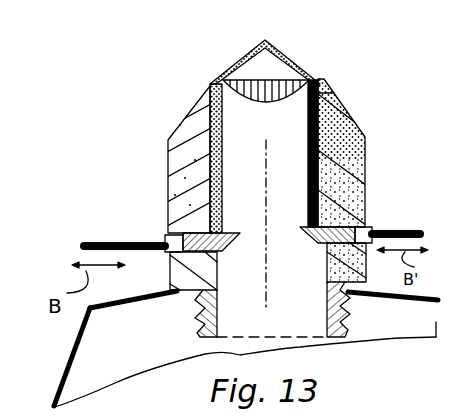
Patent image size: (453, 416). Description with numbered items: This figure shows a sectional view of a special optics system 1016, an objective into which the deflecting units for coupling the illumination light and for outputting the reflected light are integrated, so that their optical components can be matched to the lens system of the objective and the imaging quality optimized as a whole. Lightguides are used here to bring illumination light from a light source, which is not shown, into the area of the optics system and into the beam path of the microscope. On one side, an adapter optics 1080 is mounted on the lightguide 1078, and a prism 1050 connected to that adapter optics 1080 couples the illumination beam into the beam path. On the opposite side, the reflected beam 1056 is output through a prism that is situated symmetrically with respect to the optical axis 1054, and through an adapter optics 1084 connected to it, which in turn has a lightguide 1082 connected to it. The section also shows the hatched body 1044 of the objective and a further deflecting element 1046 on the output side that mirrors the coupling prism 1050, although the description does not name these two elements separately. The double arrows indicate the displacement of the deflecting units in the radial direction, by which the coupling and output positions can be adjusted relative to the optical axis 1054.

The optics system 1016 is at (198, 92).
The cap body 1044 is at (209, 105).
The reflected beam 1056 is at (333, 97).
The optical axis 1054 is at (263, 136).
The prism 1050 is at (221, 251).
The right clamping wedge 1046 is at (320, 243).
The adapter optics 1080 is at (166, 217).
The adapter optics 1084 is at (376, 226).
The lightguide 1078 is at (84, 238).
The lightguide 1082 is at (415, 228).